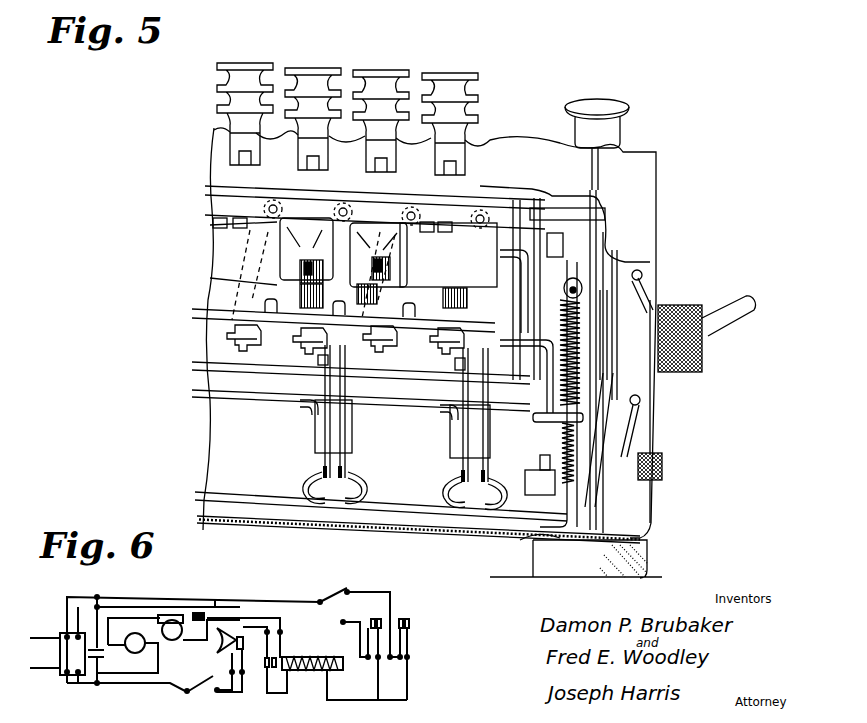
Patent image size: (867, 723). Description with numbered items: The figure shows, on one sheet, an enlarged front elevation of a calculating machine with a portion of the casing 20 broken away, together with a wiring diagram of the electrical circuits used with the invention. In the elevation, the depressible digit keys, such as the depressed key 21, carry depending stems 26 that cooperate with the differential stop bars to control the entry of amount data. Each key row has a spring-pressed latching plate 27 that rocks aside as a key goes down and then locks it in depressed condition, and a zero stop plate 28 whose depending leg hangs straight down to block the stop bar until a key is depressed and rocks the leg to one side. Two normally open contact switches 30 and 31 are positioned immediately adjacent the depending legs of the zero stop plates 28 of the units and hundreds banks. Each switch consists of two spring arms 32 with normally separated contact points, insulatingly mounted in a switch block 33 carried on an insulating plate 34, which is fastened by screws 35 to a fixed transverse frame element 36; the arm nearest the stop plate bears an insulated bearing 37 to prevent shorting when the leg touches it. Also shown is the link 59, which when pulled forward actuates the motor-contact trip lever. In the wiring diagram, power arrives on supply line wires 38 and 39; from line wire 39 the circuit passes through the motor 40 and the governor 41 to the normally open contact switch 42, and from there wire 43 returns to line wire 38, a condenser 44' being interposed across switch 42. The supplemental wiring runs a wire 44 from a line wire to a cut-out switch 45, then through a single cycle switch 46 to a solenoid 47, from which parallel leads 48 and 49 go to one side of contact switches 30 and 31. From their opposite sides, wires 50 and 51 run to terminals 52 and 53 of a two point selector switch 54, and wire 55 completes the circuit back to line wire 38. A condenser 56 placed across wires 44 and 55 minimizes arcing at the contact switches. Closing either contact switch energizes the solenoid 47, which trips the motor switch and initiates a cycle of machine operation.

In FIG. 5, the casing body 20 is at (628, 186).
In FIG. 5, the depressed key 21 is at (439, 71).
In FIG. 5, the depending stem 26 is at (300, 145).
In FIG. 5, the latching plate 27 is at (290, 236).
In FIG. 5, the zero stop plate 28 is at (300, 332).
In FIG. 5, the contact switch 30 is at (455, 367).
In FIG. 6, the contact switch 30 is at (415, 617).
In FIG. 5, the contact switch 31 is at (316, 364).
In FIG. 6, the contact switch 31 is at (377, 613).
In FIG. 5, the spring arms 32 is at (468, 380).
In FIG. 5, the switch block 33 is at (439, 461).
In FIG. 5, the plate 34 is at (446, 410).
In FIG. 5, the screws 35 is at (498, 425).
In FIG. 5, the transverse frame element 36 is at (252, 385).
In FIG. 5, the insulated bearing 37 is at (458, 290).
In FIG. 6, the supply line wire 38 is at (45, 636).
In FIG. 6, the supply line wire 39 is at (33, 670).
In FIG. 6, the motor 40 is at (135, 633).
In FIG. 6, the governor 41 is at (166, 641).
In FIG. 6, the contact switch 42 is at (270, 668).
In FIG. 6, the wire 43 is at (243, 610).
In FIG. 6, the wire 44 is at (193, 652).
In FIG. 6, the condenser 44' is at (218, 586).
In FIG. 6, the cut-out switch 45 is at (205, 690).
In FIG. 6, the single cycle switch 46 is at (227, 657).
In FIG. 6, the solenoid 47 is at (312, 676).
In FIG. 5, the lead 48 is at (440, 492).
In FIG. 6, the lead 48 is at (407, 683).
In FIG. 5, the lead 49 is at (298, 490).
In FIG. 6, the lead 49 is at (378, 680).
In FIG. 5, the wire 50 is at (480, 500).
In FIG. 6, the wire 50 is at (401, 618).
In FIG. 5, the wire 51 is at (372, 486).
In FIG. 6, the wire 51 is at (360, 638).
In FIG. 6, the terminal 52 is at (347, 588).
In FIG. 6, the terminal 53 is at (343, 622).
In FIG. 5, the two point selector switch 54 is at (738, 303).
In FIG. 6, the two point selector switch 54 is at (330, 598).
In FIG. 6, the wire 55 is at (198, 612).
In FIG. 6, the condenser 56 is at (104, 653).
In FIG. 5, the link 59 is at (528, 530).